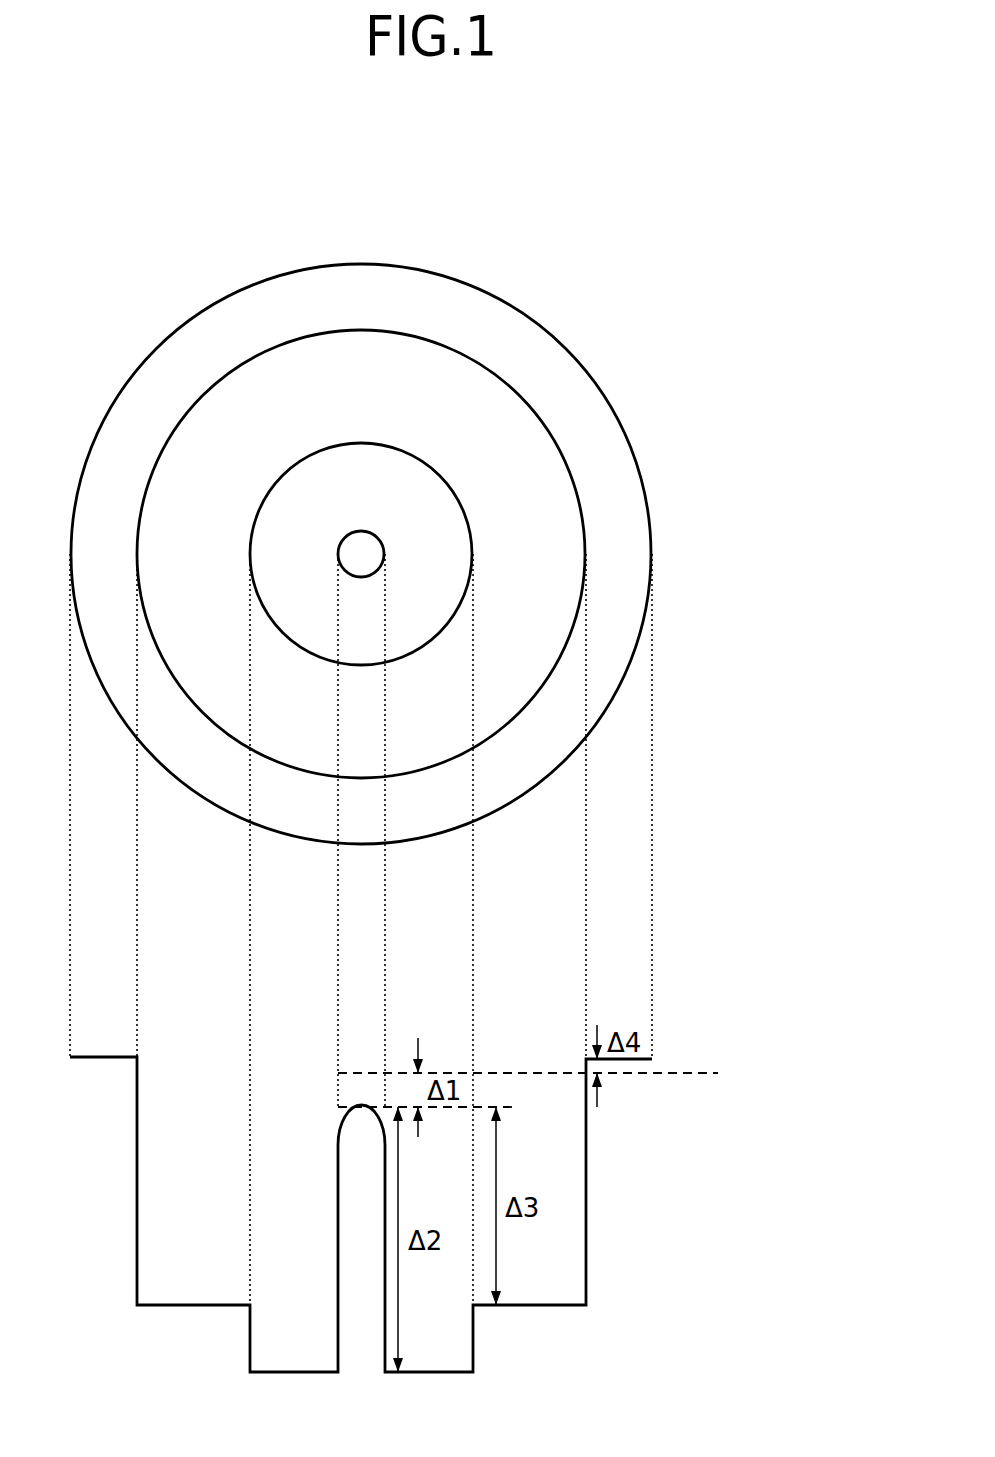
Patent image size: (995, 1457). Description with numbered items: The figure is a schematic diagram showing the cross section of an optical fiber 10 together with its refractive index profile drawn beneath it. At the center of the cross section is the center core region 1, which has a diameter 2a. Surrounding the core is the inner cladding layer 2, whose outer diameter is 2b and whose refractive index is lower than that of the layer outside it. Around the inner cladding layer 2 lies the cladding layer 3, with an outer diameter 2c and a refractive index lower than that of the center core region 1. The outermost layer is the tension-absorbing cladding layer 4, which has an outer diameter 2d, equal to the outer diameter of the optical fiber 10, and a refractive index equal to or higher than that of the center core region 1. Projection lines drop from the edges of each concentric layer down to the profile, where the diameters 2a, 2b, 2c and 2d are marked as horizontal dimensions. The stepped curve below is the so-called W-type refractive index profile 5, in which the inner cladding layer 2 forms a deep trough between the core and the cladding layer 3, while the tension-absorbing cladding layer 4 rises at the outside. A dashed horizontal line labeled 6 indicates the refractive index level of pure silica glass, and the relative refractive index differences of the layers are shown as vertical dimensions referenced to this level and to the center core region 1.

The center core region 1 is at (367, 545).
The inner cladding layer 2 is at (430, 513).
The cladding layer 3 is at (532, 490).
The tension-absorbing cladding layer 4 is at (618, 500).
The W-type refractive index profile 5 is at (633, 1018).
The refractive index level of pure silica glass 6 is at (673, 1073).
The optical fiber 10 is at (696, 190).
The diameter of the center core region 2a is at (385, 882).
The outer diameter of the inner cladding layer 2b is at (473, 909).
The outer diameter of the cladding layer 2c is at (586, 938).
The outer diameter of the tension-absorbing cladding layer 2d is at (652, 968).